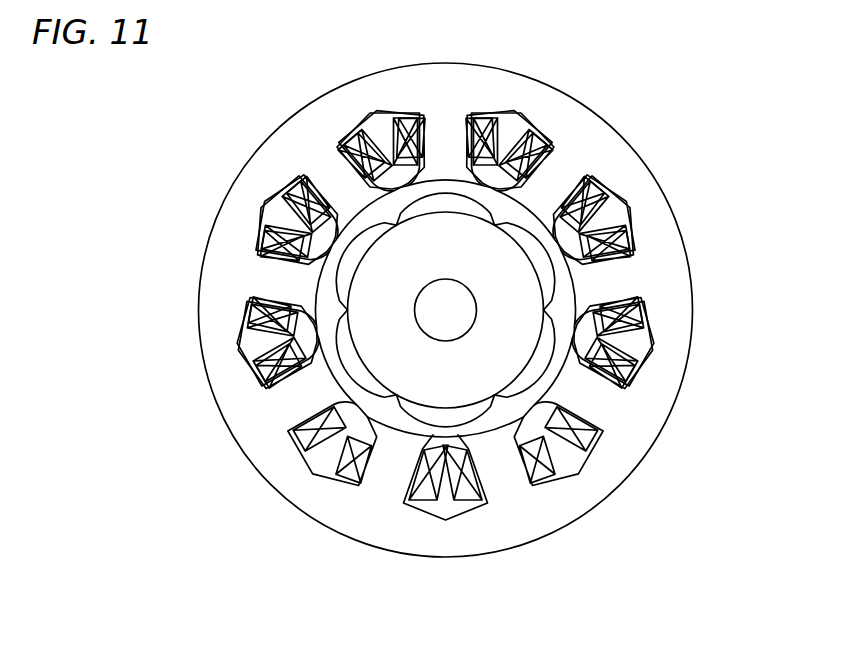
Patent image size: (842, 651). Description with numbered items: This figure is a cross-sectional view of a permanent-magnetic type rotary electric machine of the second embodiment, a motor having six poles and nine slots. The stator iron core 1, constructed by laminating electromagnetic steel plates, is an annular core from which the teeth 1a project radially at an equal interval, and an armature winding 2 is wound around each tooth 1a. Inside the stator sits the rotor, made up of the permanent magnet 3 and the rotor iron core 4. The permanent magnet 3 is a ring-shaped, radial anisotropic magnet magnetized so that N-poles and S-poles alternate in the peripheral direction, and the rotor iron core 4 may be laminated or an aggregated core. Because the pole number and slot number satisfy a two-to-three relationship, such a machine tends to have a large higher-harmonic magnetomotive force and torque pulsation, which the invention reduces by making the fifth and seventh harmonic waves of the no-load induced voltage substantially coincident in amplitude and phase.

The stator iron core 1 is at (647, 315).
The teeth 1a is at (582, 402).
The armature winding 2 is at (620, 228).
The permanent magnet 3 is at (353, 373).
The rotor iron core 4 is at (467, 390).